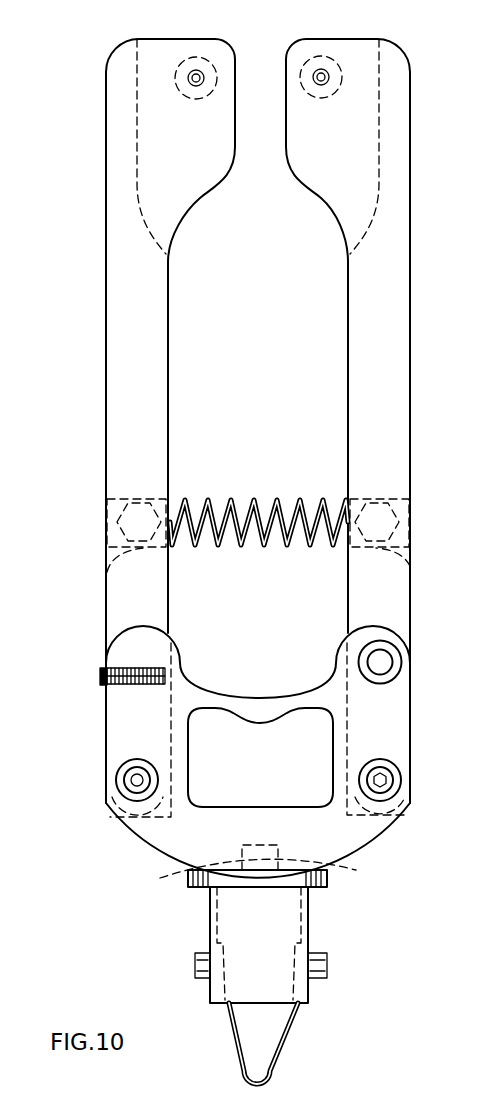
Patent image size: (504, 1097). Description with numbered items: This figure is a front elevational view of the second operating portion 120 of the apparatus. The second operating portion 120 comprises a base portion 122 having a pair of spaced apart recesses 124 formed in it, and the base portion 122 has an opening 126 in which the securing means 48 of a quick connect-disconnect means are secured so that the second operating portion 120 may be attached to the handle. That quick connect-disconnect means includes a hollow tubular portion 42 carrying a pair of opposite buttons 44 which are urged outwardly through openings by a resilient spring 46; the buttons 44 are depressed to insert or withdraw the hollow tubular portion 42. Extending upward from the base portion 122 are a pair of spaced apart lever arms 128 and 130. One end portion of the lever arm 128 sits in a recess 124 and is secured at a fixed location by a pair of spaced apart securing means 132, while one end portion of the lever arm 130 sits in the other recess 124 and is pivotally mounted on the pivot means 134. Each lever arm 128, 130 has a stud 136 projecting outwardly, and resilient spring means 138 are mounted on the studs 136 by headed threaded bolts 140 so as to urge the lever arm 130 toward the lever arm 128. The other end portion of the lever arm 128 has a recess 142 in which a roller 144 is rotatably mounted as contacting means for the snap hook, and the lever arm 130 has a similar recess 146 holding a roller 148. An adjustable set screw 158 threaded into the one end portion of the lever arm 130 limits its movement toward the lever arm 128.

The second operating portion 120 is at (447, 428).
The base portion 122 is at (150, 830).
The recesses 124 is at (132, 813).
The opening 126 is at (183, 869).
The lever arm 128 is at (392, 247).
The lever arm 130 is at (120, 270).
The securing means 132 is at (402, 662).
The pivot means 134 is at (125, 778).
The stud 136 is at (107, 571).
The resilient spring means 138 is at (236, 498).
The headed threaded bolts 140 is at (130, 522).
The recess 142 is at (365, 130).
The roller 144 is at (337, 63).
The recess 146 is at (148, 126).
The roller 148 is at (185, 62).
The adjustable set screw 158 is at (100, 675).
The hollow tubular portion 42 is at (310, 925).
The buttons 44 is at (194, 966).
The resilient spring 46 is at (280, 1049).
The securing means 48 is at (347, 865).